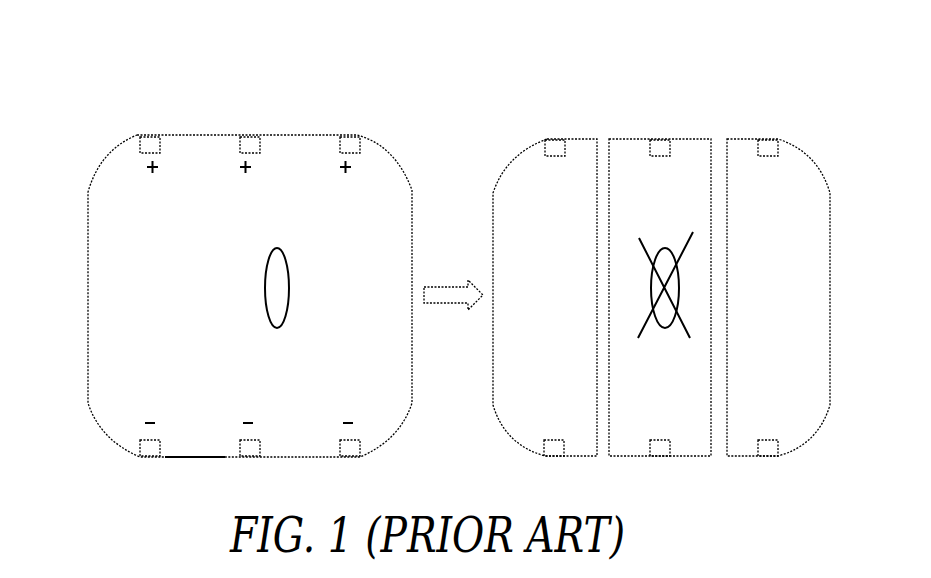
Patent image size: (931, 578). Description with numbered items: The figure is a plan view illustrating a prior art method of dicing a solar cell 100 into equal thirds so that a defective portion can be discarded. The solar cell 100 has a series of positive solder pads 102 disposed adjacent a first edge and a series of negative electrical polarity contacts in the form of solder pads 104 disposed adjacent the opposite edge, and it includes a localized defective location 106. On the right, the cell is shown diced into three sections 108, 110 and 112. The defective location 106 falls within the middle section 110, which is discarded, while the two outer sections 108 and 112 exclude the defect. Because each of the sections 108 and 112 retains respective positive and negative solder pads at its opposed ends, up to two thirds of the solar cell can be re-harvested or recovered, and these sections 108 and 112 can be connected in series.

The solar cell 100 is at (125, 68).
The positive solder pads 102 is at (152, 146).
The negative solder pads 104 is at (150, 449).
The defective location 106 is at (282, 248).
The first section 108 is at (578, 152).
The second section 110 is at (678, 150).
The third section 112 is at (789, 170).